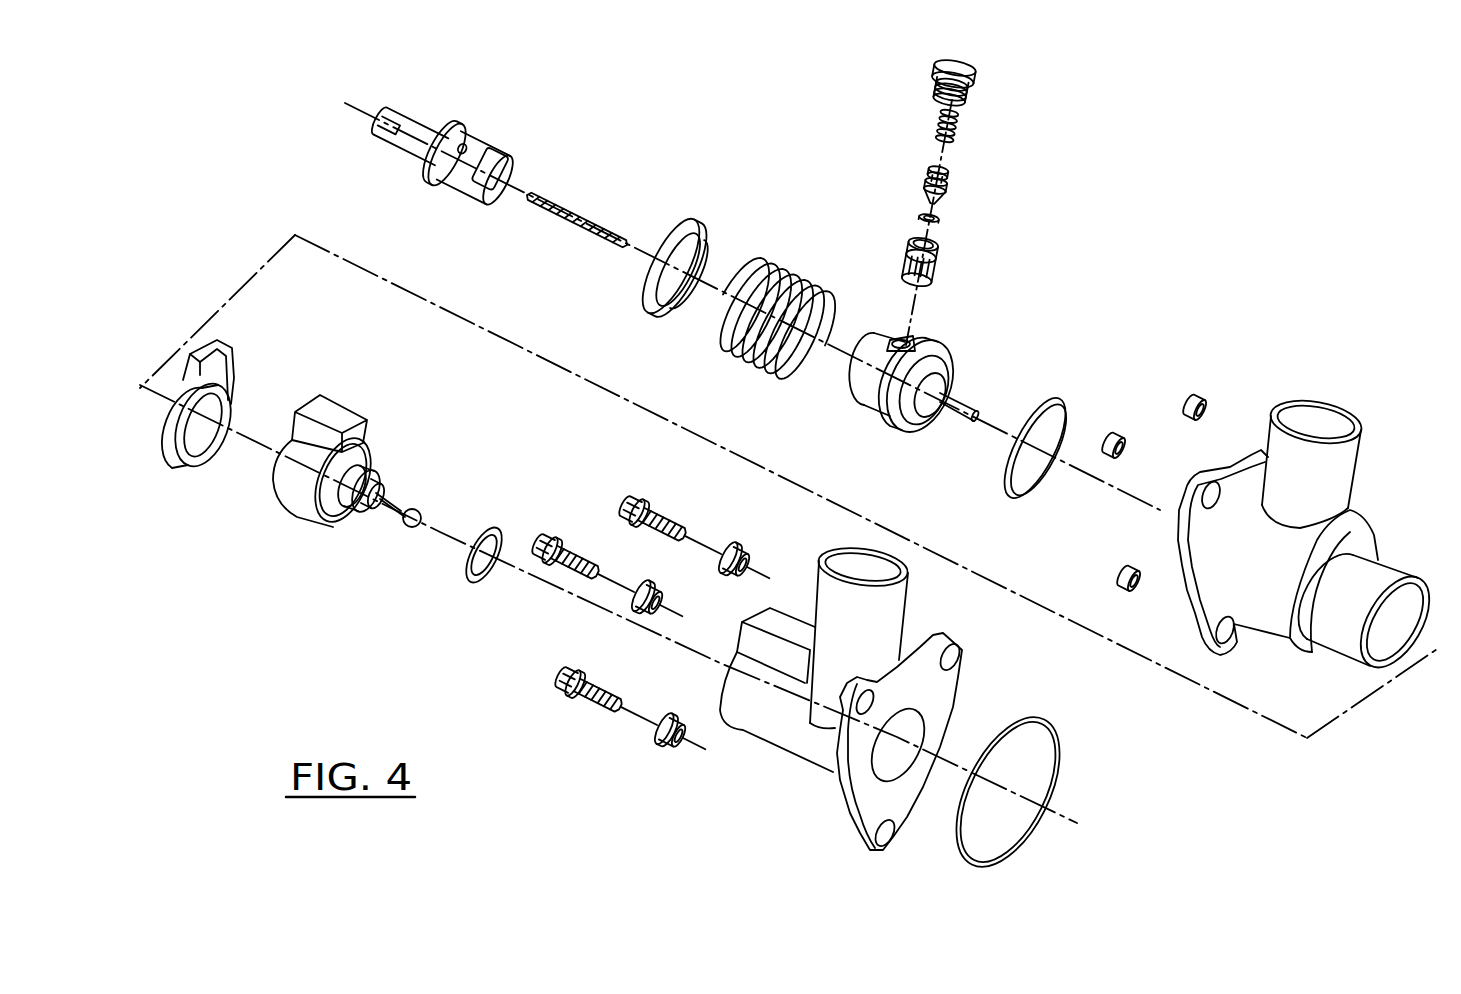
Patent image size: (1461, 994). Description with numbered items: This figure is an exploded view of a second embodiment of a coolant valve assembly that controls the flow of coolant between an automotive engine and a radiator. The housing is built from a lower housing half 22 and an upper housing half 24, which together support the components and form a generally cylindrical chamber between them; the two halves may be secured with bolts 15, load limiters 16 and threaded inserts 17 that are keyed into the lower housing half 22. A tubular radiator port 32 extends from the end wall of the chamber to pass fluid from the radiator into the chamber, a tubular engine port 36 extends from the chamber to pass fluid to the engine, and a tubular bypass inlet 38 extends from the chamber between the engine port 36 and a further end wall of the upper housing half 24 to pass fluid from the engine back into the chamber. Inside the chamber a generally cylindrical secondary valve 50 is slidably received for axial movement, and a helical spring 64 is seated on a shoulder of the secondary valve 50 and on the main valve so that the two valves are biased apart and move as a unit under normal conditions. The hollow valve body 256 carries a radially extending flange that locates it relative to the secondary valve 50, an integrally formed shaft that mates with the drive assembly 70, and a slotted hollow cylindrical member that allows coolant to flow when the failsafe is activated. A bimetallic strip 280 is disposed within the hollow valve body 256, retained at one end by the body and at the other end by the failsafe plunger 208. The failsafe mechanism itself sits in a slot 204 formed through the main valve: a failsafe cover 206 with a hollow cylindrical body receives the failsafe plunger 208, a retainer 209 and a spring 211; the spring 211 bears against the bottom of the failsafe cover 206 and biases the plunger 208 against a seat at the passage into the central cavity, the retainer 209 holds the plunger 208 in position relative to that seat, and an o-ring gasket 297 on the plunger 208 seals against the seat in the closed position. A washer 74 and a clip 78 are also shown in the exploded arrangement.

The bolts 15 is at (632, 517).
The load limiters 16 is at (722, 568).
The threaded inserts 17 is at (1187, 408).
The lower housing half 22 is at (1258, 615).
The upper housing half 24 is at (787, 737).
The radiator port 32 is at (1409, 596).
The engine port 36 is at (1315, 415).
The bypass inlet 38 is at (855, 562).
The secondary valve 50 is at (690, 213).
The spring 64 is at (797, 273).
The drive assembly 70 is at (343, 413).
The O-ring 74 is at (493, 520).
The clip 78 is at (188, 467).
The slot 204 is at (918, 333).
The failsafe cover 206 is at (975, 84).
The failsafe plunger 208 is at (947, 180).
The retainer 209 is at (942, 263).
The spring 211 is at (958, 132).
The hollow valve body 256 is at (427, 132).
The bimetallic strip 280 is at (577, 217).
The o-ring gasket 297 is at (940, 220).